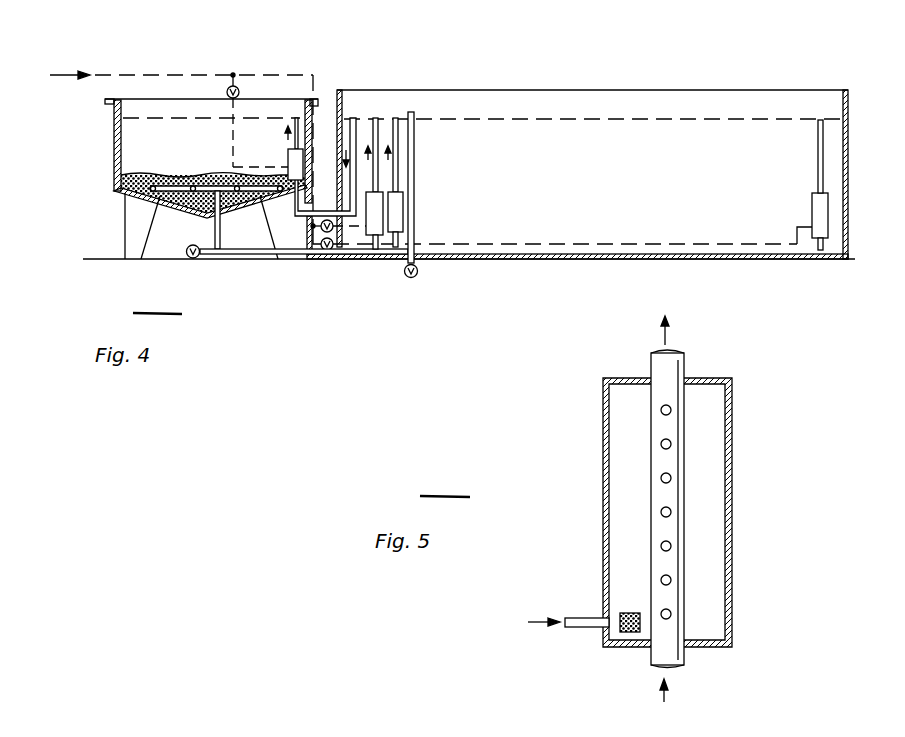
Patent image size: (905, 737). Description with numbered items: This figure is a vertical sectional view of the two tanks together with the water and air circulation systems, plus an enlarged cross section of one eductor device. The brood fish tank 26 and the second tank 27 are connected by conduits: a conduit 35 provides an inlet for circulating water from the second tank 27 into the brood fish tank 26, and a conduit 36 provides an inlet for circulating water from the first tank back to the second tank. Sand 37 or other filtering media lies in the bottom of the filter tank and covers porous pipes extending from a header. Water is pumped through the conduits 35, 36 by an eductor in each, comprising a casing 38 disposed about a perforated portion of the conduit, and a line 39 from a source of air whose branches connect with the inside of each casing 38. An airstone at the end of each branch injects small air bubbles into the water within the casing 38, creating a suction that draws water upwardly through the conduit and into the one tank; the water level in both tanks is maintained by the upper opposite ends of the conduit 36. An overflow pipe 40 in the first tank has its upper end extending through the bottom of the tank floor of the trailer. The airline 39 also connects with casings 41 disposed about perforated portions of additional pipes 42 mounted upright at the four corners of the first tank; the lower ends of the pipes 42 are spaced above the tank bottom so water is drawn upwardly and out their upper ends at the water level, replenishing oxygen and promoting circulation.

In FIG. 4, the brood fish tank 26 is at (583, 90).
In FIG. 4, the second tank 27 is at (115, 135).
In FIG. 4, the conduit 35 is at (250, 256).
In FIG. 5, the conduit 35 is at (685, 368).
In FIG. 4, the conduit 36 is at (352, 140).
In FIG. 4, the sand 37 is at (184, 172).
In FIG. 4, the casing 38 is at (288, 156).
In FIG. 5, the casing 38 is at (732, 435).
In FIG. 4, the line 39 is at (110, 72).
In FIG. 5, the line 39 is at (582, 629).
In FIG. 4, the overflow pipe 40 is at (414, 155).
In FIG. 4, the casings 41 is at (397, 222).
In FIG. 4, the additional pipes 42 is at (818, 155).